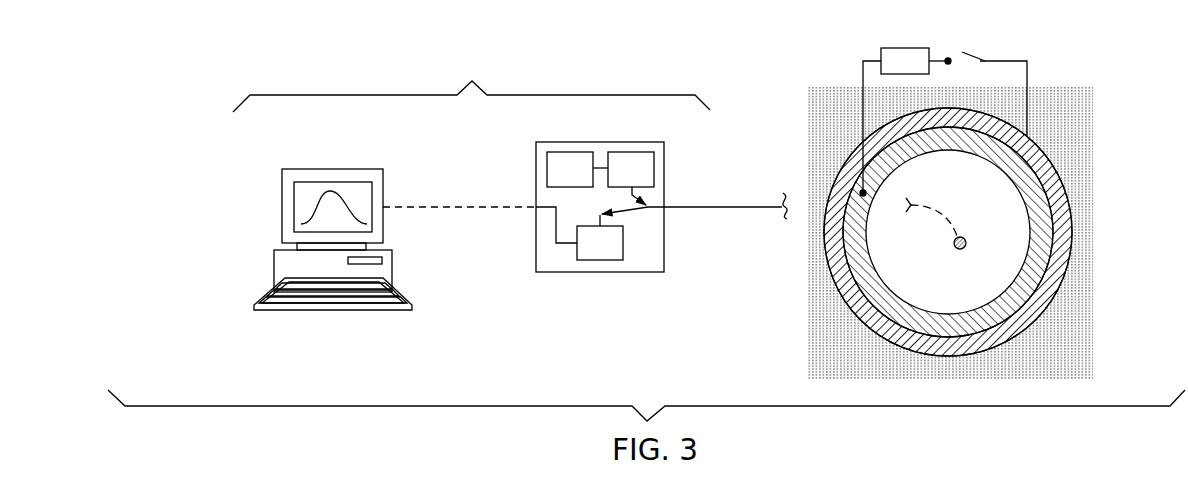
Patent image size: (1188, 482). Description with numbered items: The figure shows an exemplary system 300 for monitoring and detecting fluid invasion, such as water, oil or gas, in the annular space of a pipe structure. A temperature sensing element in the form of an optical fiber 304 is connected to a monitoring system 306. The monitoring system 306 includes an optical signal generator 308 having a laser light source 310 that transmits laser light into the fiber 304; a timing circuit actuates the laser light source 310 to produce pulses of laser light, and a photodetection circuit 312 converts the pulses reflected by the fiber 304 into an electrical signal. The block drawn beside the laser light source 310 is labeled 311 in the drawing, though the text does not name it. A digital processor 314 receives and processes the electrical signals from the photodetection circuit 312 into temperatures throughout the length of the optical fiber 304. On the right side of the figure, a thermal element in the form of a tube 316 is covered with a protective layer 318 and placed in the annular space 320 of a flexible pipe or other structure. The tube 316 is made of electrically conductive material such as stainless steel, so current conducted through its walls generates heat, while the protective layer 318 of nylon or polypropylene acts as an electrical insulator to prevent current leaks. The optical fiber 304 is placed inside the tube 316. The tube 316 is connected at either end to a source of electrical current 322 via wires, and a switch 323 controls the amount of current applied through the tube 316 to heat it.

The system 300 is at (195, 82).
The optical fiber 304 is at (723, 208).
The monitoring system 306 is at (471, 83).
The optical signal generator 308 is at (520, 164).
The laser light source 310 is at (648, 180).
The detector 311 is at (587, 180).
The photodetection circuit 312 is at (617, 254).
The digital processor 314 is at (270, 222).
The tube 316 is at (1043, 195).
The protective layer 318 is at (1043, 158).
The annular space 320 is at (1068, 118).
The source of electrical current 322 is at (923, 73).
The switch 323 is at (954, 49).